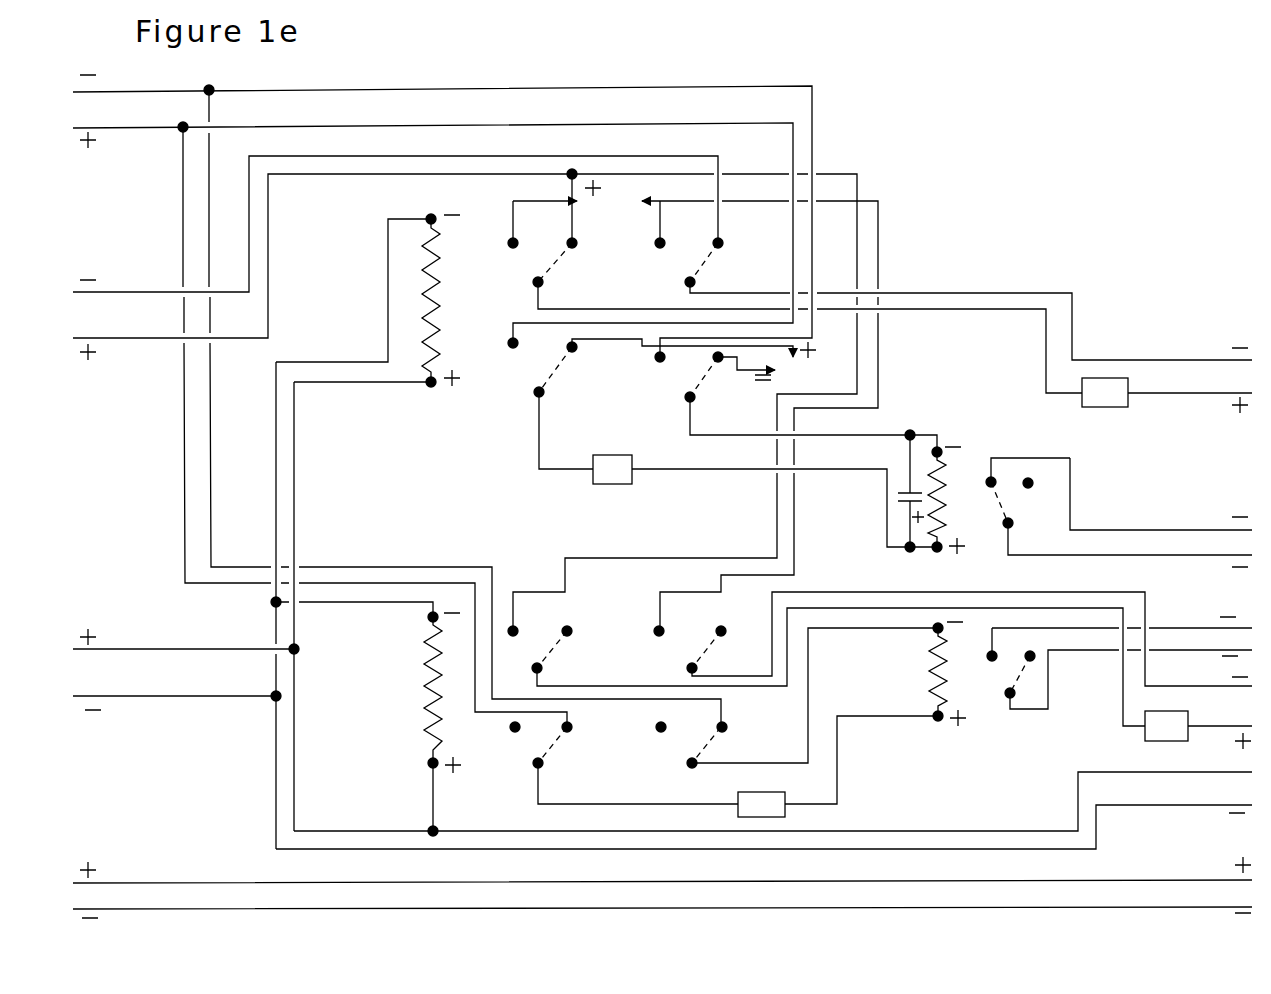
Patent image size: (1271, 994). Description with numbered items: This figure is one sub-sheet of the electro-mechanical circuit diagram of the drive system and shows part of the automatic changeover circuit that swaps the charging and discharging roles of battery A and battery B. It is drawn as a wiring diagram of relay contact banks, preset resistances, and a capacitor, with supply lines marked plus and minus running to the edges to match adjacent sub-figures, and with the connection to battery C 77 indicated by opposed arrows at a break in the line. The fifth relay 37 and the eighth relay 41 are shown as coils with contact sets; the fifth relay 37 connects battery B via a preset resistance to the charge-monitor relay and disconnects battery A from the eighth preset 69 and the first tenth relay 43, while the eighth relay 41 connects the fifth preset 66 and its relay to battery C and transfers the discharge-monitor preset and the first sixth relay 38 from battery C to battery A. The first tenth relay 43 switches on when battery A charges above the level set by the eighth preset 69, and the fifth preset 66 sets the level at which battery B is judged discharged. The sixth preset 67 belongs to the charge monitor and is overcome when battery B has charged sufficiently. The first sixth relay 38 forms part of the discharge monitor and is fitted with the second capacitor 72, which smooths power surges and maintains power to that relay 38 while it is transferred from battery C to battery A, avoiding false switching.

The relay 5 37 is at (416, 697).
The relay 6a 38 is at (984, 441).
The relay 8 41 is at (408, 276).
The relay 10a 43 is at (985, 707).
The preset 5 66 is at (1114, 414).
The preset 6 67 is at (1148, 748).
The preset 8 69 is at (598, 492).
The capacitor C2 72 is at (895, 517).
The connection to battery C 77 is at (618, 210).